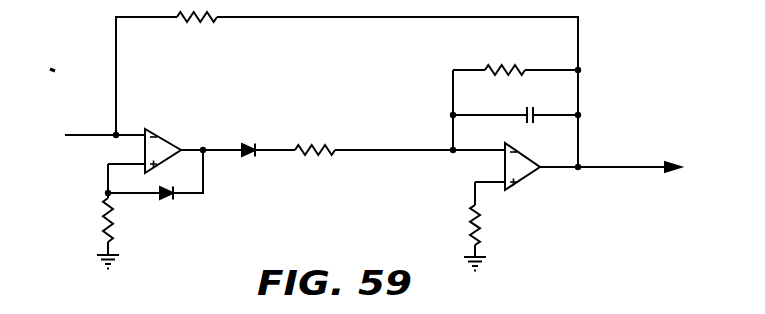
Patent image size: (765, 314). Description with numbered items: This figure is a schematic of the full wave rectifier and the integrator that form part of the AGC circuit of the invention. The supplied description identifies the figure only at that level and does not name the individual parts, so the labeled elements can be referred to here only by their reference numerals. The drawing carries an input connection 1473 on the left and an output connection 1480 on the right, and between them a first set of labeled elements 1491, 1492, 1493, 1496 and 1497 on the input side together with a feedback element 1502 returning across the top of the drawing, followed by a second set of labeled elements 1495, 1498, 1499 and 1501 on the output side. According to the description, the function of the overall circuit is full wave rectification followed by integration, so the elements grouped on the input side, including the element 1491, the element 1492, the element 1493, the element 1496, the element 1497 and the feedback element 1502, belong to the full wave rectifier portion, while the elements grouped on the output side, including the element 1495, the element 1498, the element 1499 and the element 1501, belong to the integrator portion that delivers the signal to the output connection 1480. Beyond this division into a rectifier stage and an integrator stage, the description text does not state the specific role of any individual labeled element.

The input signal line 1473 is at (77, 134).
The output signal line 1480 is at (633, 164).
The operational amplifier 1491 is at (164, 136).
The diode 1492 is at (167, 200).
The resistor 1493 is at (102, 226).
The operational amplifier 1495 is at (523, 178).
The diode 1496 is at (243, 146).
The resistor 1497 is at (325, 146).
The resistor 1498 is at (471, 221).
The feedback resistor 1499 is at (504, 67).
The feedback capacitor 1501 is at (528, 108).
The feedback resistor 1502 is at (196, 23).